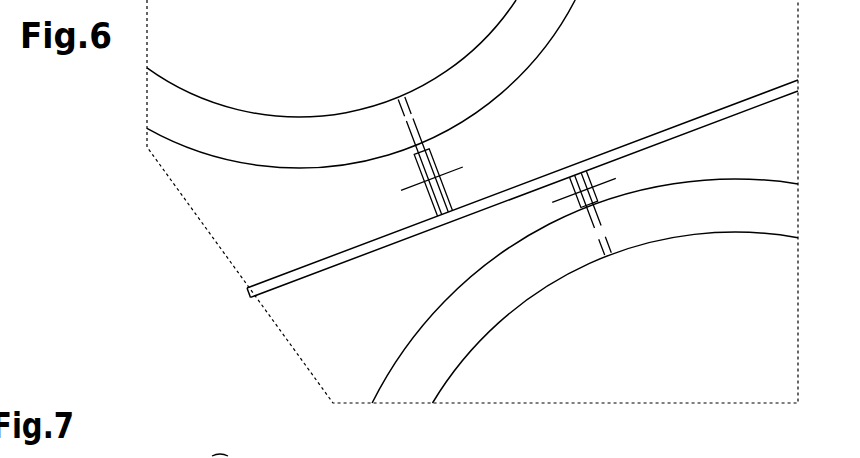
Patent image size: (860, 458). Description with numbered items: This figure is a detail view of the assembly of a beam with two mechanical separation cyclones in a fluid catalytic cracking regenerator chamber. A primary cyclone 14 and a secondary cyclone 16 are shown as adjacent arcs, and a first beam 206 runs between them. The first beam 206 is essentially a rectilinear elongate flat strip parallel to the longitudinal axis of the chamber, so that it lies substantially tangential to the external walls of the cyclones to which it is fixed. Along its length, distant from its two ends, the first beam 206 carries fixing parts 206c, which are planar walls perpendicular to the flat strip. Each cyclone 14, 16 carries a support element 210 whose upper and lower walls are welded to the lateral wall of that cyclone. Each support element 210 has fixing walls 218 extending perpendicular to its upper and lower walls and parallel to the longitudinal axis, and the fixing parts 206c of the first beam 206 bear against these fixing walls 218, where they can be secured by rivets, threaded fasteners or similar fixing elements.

The primary cyclone 14 is at (277, 117).
The secondary cyclone 16 is at (713, 233).
The first beam 206 is at (318, 262).
The fixing part 206c is at (452, 196).
The support element 210 is at (380, 177).
The fixing wall 218 is at (397, 142).